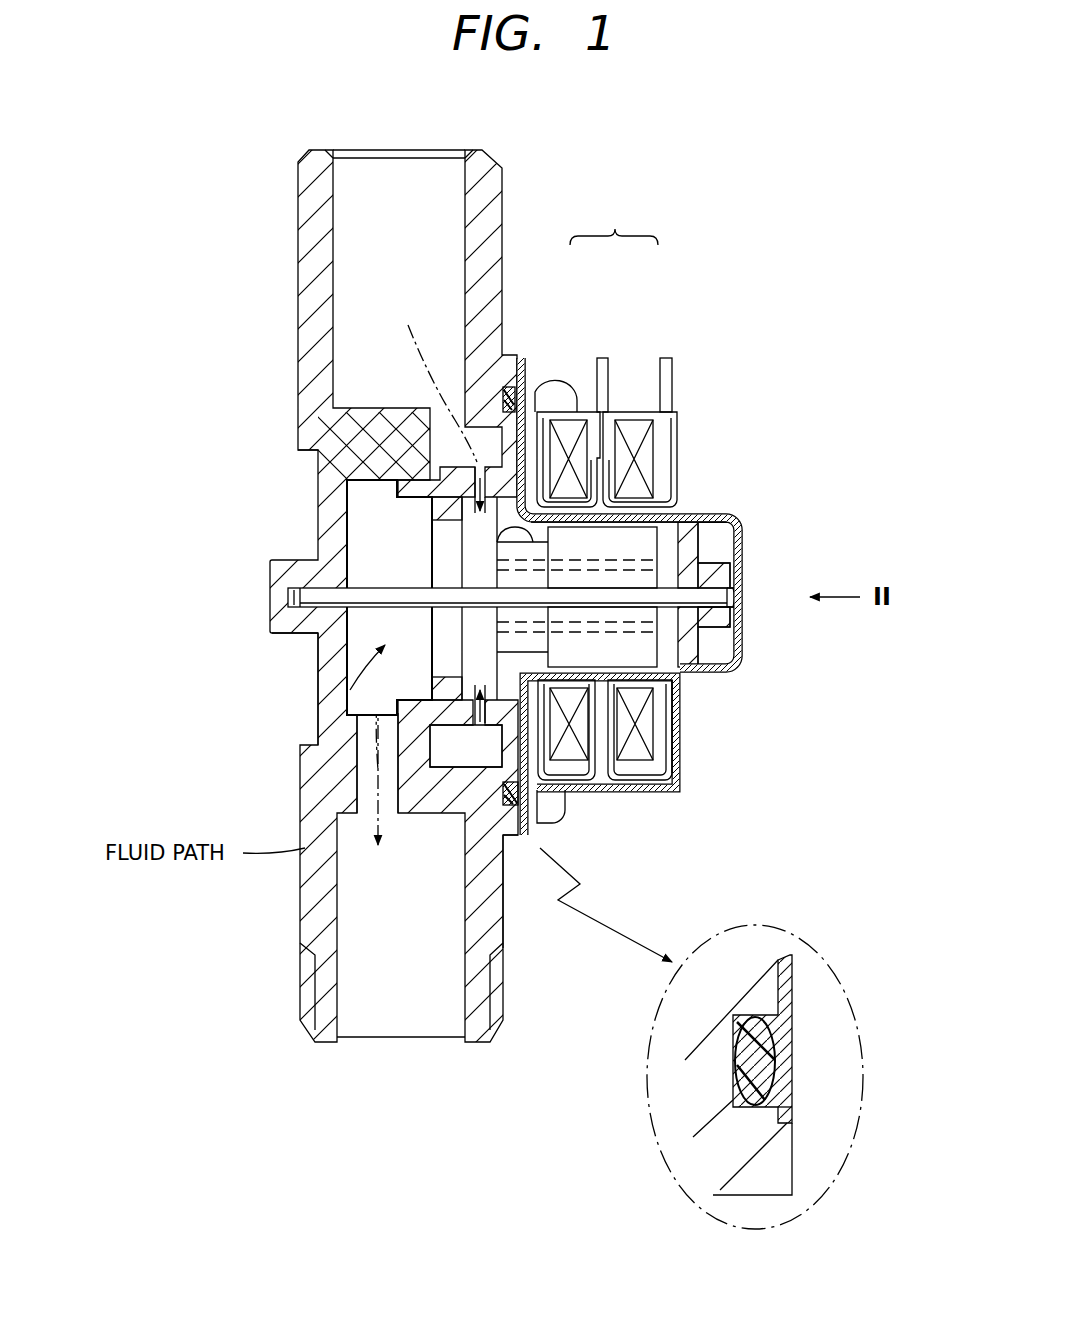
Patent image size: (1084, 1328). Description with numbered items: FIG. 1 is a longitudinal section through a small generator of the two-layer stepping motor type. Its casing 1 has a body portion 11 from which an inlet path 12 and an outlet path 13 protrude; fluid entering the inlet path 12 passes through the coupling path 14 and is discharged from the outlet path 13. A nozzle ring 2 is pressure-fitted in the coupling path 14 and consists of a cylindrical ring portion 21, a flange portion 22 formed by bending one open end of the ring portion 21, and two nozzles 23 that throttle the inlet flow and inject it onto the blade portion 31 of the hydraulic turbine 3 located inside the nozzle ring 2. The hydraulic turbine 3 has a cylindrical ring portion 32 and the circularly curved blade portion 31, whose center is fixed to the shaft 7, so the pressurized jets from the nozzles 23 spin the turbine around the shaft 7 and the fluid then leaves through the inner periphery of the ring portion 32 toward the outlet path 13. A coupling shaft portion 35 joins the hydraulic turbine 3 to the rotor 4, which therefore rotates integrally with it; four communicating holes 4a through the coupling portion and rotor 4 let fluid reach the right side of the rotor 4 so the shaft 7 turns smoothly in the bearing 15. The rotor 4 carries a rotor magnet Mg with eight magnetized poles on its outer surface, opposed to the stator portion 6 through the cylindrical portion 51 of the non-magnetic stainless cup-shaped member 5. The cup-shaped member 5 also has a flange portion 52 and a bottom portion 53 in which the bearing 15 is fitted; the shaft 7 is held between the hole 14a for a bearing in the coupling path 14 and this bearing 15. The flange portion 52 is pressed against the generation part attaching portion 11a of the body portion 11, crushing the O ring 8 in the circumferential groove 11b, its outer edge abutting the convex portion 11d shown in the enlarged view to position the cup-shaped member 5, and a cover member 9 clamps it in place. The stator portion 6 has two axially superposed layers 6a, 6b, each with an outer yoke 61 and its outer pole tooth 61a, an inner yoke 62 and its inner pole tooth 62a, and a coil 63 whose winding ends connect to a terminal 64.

The casing 1 is at (268, 442).
The nozzle ring 2 is at (340, 438).
The hydraulic turbine 3 is at (440, 564).
The rotor 4 is at (736, 655).
The communicating holes 4a is at (695, 542).
The cup-shaped member 5 is at (708, 512).
The stator portion 6 is at (614, 221).
The layer 6a is at (582, 388).
The layer 6b is at (636, 388).
The shaft 7 is at (300, 593).
The O ring 8 is at (506, 392).
The cover member 9 is at (532, 378).
The body portion 11 is at (270, 611).
The generation part attaching portion 11a is at (510, 845).
The circumferential groove 11b is at (548, 828).
The convex portion 11d is at (793, 1165).
The inlet path 12 is at (470, 150).
The outlet path 13 is at (326, 1045).
The coupling path 14 is at (347, 667).
The hole for a bearing 14a is at (307, 636).
The bearing 15 is at (734, 600).
The ring portion 21 is at (353, 748).
The flange portion 22 is at (493, 878).
The nozzles 23 is at (425, 470).
The blade portion 31 is at (480, 618).
The ring portion 32 is at (430, 506).
The coupling shaft portion 35 is at (540, 528).
The cylindrical portion 51 is at (705, 503).
The flange portion 52 is at (509, 387).
The bottom portion 53 is at (743, 535).
The outer yoke 61 is at (685, 766).
The outer pole tooth 61a is at (665, 697).
The inner yoke 62 is at (608, 778).
The inner pole tooth 62a is at (636, 712).
The coil 63 is at (650, 770).
The terminal 64 is at (675, 356).
The rotor magnet Mg is at (628, 548).